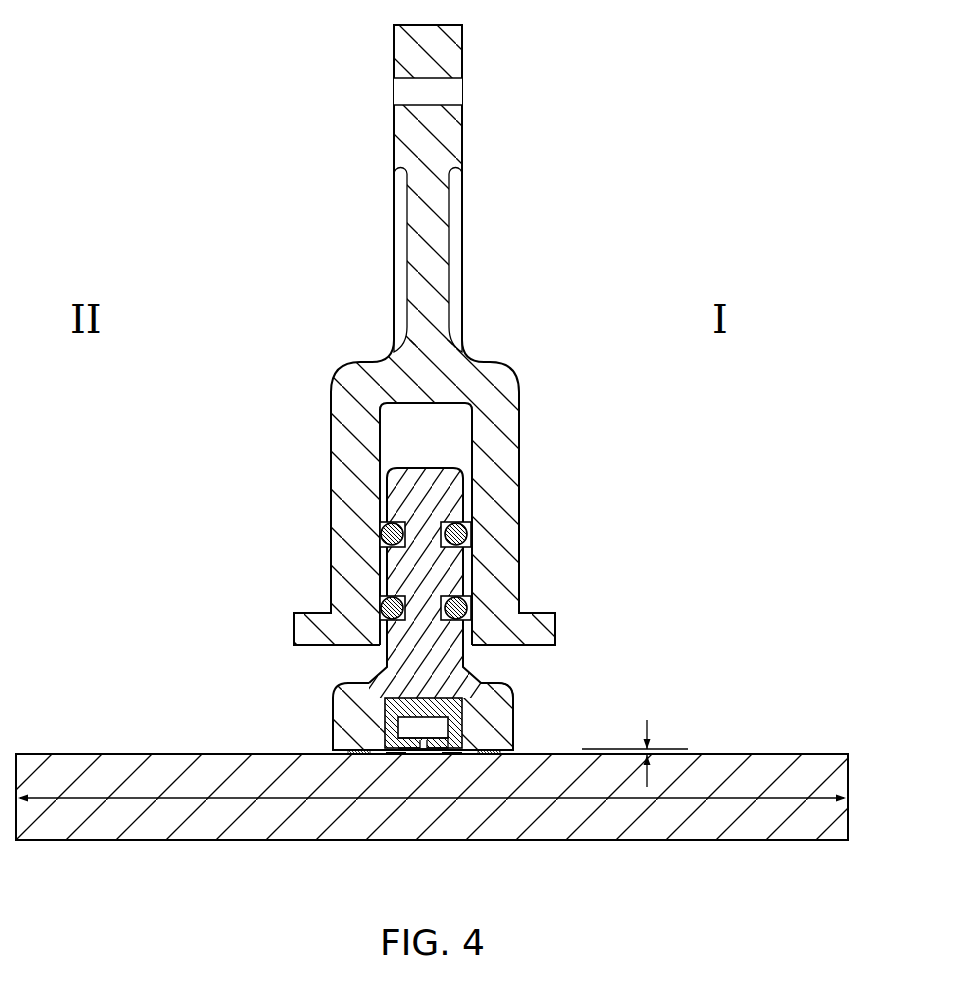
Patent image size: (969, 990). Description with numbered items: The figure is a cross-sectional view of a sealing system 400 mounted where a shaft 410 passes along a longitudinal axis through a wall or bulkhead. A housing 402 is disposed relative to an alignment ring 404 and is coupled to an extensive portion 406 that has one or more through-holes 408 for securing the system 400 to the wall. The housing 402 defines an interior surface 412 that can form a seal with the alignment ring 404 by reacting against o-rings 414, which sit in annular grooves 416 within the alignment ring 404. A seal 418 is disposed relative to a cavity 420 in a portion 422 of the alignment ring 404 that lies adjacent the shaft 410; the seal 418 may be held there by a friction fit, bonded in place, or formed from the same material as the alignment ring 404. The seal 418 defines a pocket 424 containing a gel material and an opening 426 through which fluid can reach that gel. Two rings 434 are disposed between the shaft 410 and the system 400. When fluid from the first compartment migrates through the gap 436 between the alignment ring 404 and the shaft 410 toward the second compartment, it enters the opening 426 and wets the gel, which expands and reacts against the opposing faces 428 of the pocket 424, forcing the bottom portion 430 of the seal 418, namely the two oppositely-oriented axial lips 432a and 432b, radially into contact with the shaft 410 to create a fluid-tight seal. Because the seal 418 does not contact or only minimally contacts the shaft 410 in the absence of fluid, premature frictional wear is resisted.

The system 400 is at (242, 107).
The housing 402 is at (408, 492).
The alignment ring 404 is at (445, 506).
The extensive portion 406 is at (514, 158).
The through-hole 408 is at (460, 90).
The shaft 410 is at (85, 755).
The interior surface 412 is at (442, 446).
The o-ring 414 is at (446, 531).
The annular groove 416 is at (445, 612).
The seal 418 is at (372, 700).
The cavity 420 is at (424, 697).
The portion of the alignment ring 422 is at (488, 683).
The pocket 424 is at (390, 716).
The opening 426 is at (424, 752).
The opposing faces 428 is at (398, 727).
The bottom portion 430 is at (448, 740).
The axial lip 432a is at (452, 755).
The axial lip 432b is at (396, 755).
The ring 434 is at (354, 760).
The gap 436 is at (686, 749).